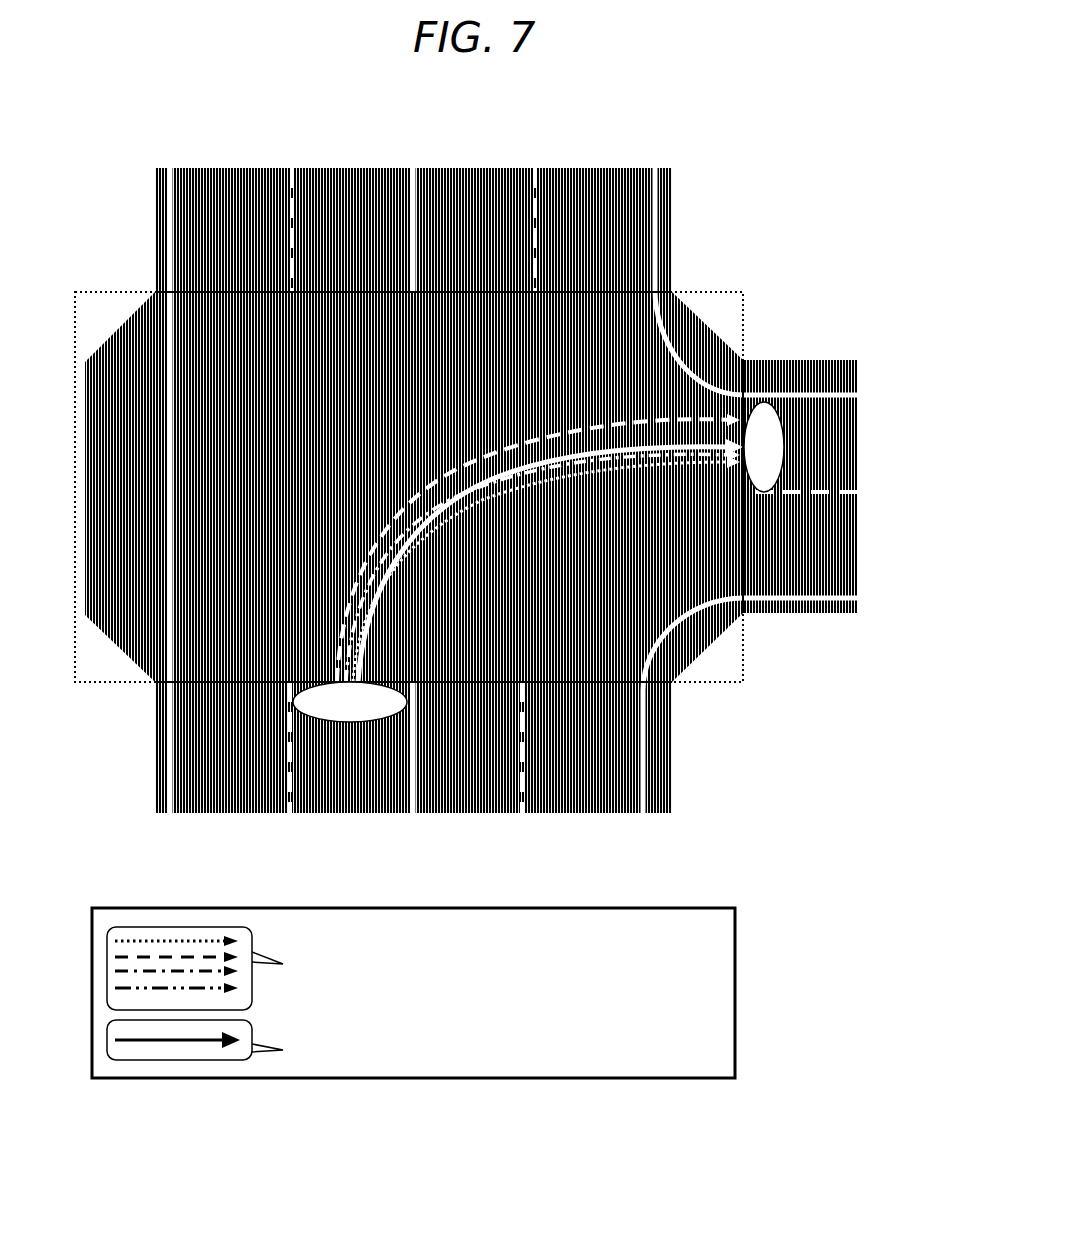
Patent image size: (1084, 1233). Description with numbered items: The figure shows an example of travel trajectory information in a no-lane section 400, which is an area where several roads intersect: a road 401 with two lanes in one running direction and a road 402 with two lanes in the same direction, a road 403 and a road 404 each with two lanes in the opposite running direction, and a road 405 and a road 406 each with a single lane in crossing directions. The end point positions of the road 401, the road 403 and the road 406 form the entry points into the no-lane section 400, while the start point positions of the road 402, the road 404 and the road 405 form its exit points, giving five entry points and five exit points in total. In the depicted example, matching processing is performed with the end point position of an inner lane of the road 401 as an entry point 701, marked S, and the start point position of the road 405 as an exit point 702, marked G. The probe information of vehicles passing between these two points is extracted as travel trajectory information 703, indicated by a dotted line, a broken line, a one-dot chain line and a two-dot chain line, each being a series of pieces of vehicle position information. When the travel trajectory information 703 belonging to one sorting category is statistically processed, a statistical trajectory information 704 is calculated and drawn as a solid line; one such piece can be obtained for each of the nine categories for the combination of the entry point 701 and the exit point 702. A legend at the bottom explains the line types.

The no-lane section 400 is at (744, 323).
The road 401 is at (220, 814).
The road 402 is at (210, 167).
The road 403 is at (476, 167).
The road 404 is at (490, 814).
The road 405 is at (858, 410).
The road 406 is at (860, 578).
The entry point 701 is at (310, 711).
The exit point 702 is at (766, 420).
The travel trajectory information 703 is at (157, 927).
The statistical trajectory information 704 is at (163, 1060).